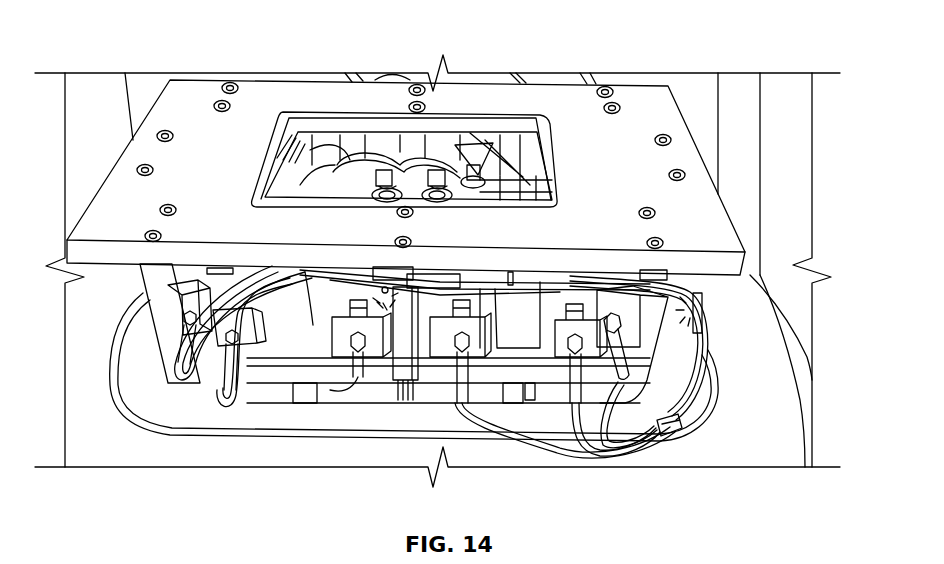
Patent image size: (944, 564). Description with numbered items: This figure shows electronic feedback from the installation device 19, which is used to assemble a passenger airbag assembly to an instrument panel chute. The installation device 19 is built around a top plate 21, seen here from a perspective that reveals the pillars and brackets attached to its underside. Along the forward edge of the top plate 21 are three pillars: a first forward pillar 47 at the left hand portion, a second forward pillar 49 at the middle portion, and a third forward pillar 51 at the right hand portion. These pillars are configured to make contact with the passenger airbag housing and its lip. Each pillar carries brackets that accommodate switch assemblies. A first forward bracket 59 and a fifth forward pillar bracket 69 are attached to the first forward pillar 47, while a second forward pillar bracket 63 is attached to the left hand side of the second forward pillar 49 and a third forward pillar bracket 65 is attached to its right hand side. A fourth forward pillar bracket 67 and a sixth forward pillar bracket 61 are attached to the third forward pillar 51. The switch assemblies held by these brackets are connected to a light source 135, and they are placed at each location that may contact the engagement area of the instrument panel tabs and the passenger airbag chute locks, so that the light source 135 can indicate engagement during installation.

The installation device 19 is at (133, 212).
The top plate 21 is at (640, 118).
The first forward pillar 47 is at (155, 292).
The sixth forward pillar bracket 61 is at (120, 407).
The first forward bracket 59 is at (295, 285).
The second forward pillar bracket 63 is at (385, 365).
The second forward pillar 49 is at (408, 370).
The third forward pillar bracket 65 is at (427, 373).
The fourth forward pillar bracket 67 is at (597, 360).
The third forward pillar 51 is at (642, 353).
The fifth forward pillar bracket 69 is at (628, 322).
The light source 135 is at (385, 283).